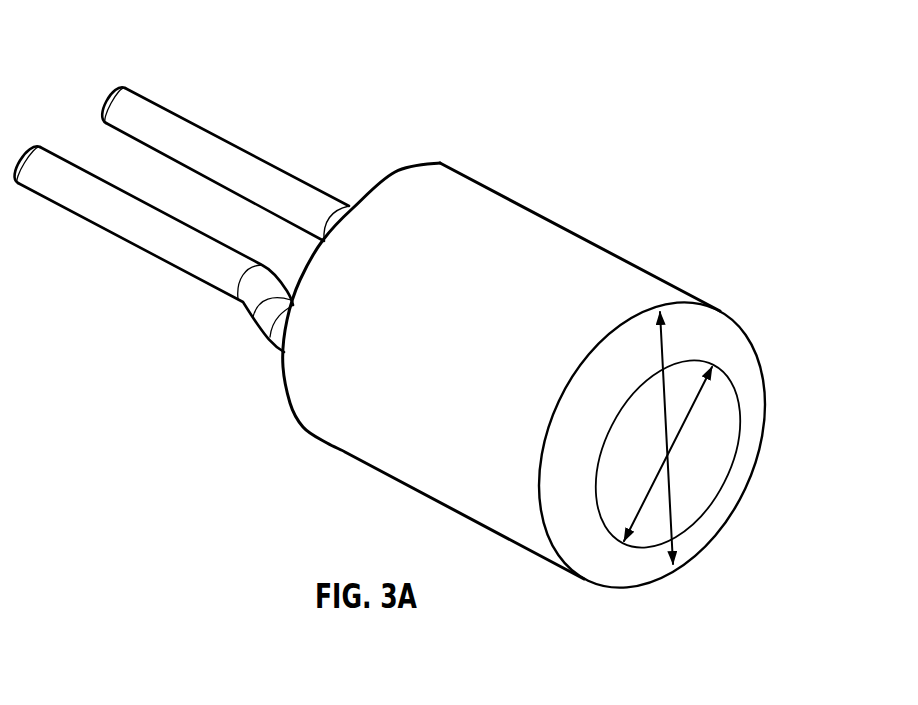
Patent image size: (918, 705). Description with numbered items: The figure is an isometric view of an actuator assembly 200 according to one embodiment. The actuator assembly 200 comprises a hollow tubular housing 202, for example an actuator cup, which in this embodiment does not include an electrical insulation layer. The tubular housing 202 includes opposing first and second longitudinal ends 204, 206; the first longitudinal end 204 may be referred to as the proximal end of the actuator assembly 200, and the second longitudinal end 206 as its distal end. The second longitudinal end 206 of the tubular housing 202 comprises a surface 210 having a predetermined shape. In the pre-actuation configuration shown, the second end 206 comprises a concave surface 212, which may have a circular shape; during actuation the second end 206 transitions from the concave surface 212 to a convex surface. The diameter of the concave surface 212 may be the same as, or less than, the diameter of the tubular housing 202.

The actuator assembly 200 is at (337, 42).
The tubular housing 202 is at (558, 247).
The first longitudinal end 204 is at (407, 154).
The second longitudinal end 206 is at (749, 305).
The surface 210 is at (696, 490).
The concave surface 212 is at (651, 527).